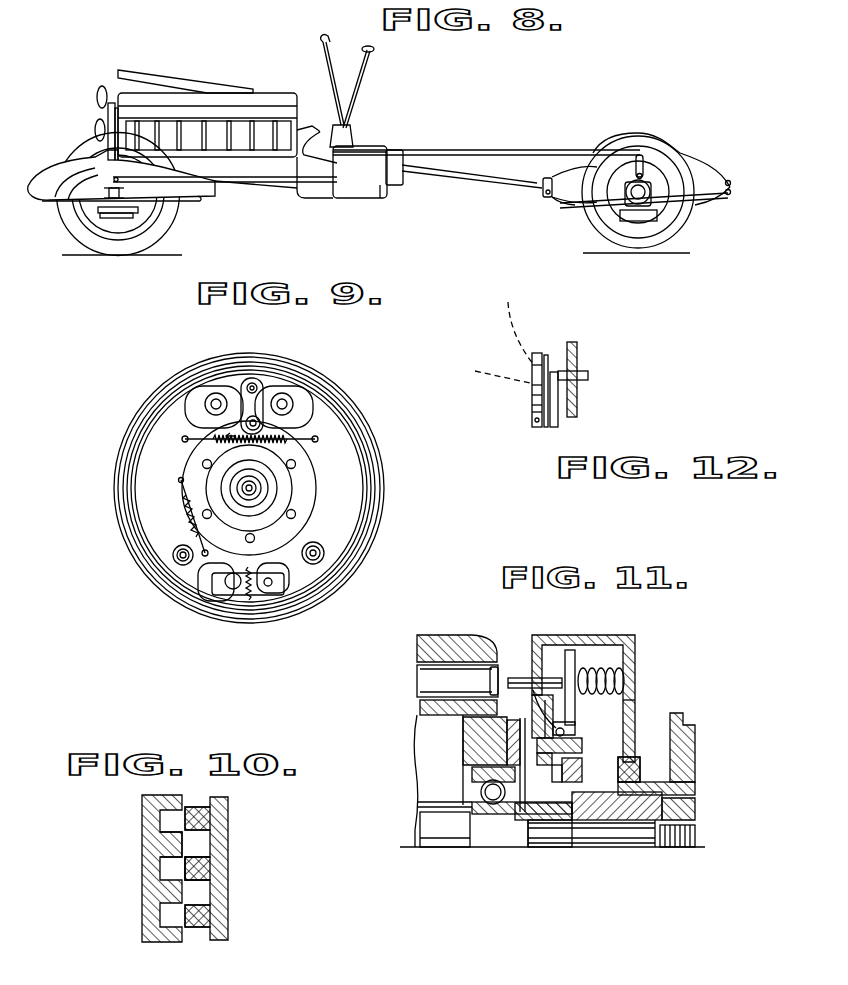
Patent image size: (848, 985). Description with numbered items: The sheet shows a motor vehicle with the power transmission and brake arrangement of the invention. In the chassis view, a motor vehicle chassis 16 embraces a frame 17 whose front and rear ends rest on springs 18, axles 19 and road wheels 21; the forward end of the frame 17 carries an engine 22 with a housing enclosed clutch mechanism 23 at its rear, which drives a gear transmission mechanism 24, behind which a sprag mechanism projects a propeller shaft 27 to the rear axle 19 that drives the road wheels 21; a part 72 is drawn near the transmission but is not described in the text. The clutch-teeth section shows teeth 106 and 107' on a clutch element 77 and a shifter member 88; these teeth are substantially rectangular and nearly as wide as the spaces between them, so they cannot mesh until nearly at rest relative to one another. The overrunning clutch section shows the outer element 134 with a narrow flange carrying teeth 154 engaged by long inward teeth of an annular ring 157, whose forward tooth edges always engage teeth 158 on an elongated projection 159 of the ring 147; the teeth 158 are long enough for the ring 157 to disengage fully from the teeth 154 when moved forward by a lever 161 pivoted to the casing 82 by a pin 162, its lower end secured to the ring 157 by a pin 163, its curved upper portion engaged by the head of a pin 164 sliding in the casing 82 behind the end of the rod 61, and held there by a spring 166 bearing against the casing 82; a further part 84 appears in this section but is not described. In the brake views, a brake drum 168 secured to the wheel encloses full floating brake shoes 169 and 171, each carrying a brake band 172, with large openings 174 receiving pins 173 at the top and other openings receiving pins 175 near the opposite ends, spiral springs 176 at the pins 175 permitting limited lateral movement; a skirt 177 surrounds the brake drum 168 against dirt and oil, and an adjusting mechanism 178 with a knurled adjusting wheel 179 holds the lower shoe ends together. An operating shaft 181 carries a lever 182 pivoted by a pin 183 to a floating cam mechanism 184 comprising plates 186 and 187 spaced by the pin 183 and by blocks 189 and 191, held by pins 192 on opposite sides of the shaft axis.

In FIG. 8, the motor vehicle chassis 16 is at (633, 148).
In FIG. 8, the frame 17 is at (517, 158).
In FIG. 8, the springs 18 is at (50, 198).
In FIG. 8, the axles 19 is at (105, 192).
In FIG. 8, the road wheels 21 is at (130, 240).
In FIG. 8, the motor vehicle engine 22 is at (222, 97).
In FIG. 8, the housing enclosed clutch mechanism 23 is at (303, 190).
In FIG. 8, the gear transmission mechanism 24 is at (373, 146).
In FIG. 8, the propeller shaft 27 is at (467, 172).
In FIG. 8, the bracket 72 is at (406, 172).
In FIG. 8, the casing 82 is at (393, 187).
In FIG. 11, the casing 82 is at (631, 660).
In FIG. 11, the rod 61 is at (456, 670).
In FIG. 10, the clutch element 77 is at (140, 893).
In FIG. 10, the shifter member 88 is at (218, 910).
In FIG. 10, the teeth 106 is at (148, 824).
In FIG. 10, the teeth 107' is at (238, 849).
In FIG. 11, the outer element of the overrunning clutch 134 is at (584, 765).
In FIG. 11, the ring 147 is at (468, 768).
In FIG. 11, the teeth 154 is at (578, 758).
In FIG. 11, the annular ring 157 is at (548, 740).
In FIG. 11, the teeth 158 is at (512, 826).
In FIG. 11, the elongated projection 159 is at (536, 840).
In FIG. 11, the lever 161 is at (628, 668).
In FIG. 11, the pin 162 is at (557, 728).
In FIG. 11, the pin 163 is at (562, 850).
In FIG. 11, the pin 164 is at (558, 670).
In FIG. 11, the spring 166 is at (598, 693).
In FIG. 11, the gear 84 is at (565, 795).
In FIG. 9, the brake drum 168 is at (312, 385).
In FIG. 9, the brake shoe 169 is at (155, 470).
In FIG. 9, the brake shoe 171 is at (327, 428).
In FIG. 9, the brake band 172 is at (152, 428).
In FIG. 9, the pins 173 is at (210, 400).
In FIG. 9, the large openings 174 is at (225, 396).
In FIG. 9, the pins 175 is at (175, 558).
In FIG. 9, the spiral springs 176 is at (186, 568).
In FIG. 9, the skirt 177 is at (357, 390).
In FIG. 9, the adjusting mechanism 178 is at (243, 592).
In FIG. 9, the knurled adjusting wheel 179 is at (250, 603).
In FIG. 12, the operating shaft 181 is at (578, 370).
In FIG. 12, the lever 182 is at (574, 409).
In FIG. 12, the pin 183 is at (541, 420).
In FIG. 9, the floating cam mechanism 184 is at (249, 372).
In FIG. 12, the floating cam mechanism 184 is at (527, 370).
In FIG. 12, the plate 186 is at (532, 410).
In FIG. 12, the plate 187 is at (552, 370).
In FIG. 12, the block 189 is at (533, 402).
In FIG. 12, the block 191 is at (538, 353).
In FIG. 12, the pins 192 is at (486, 333).